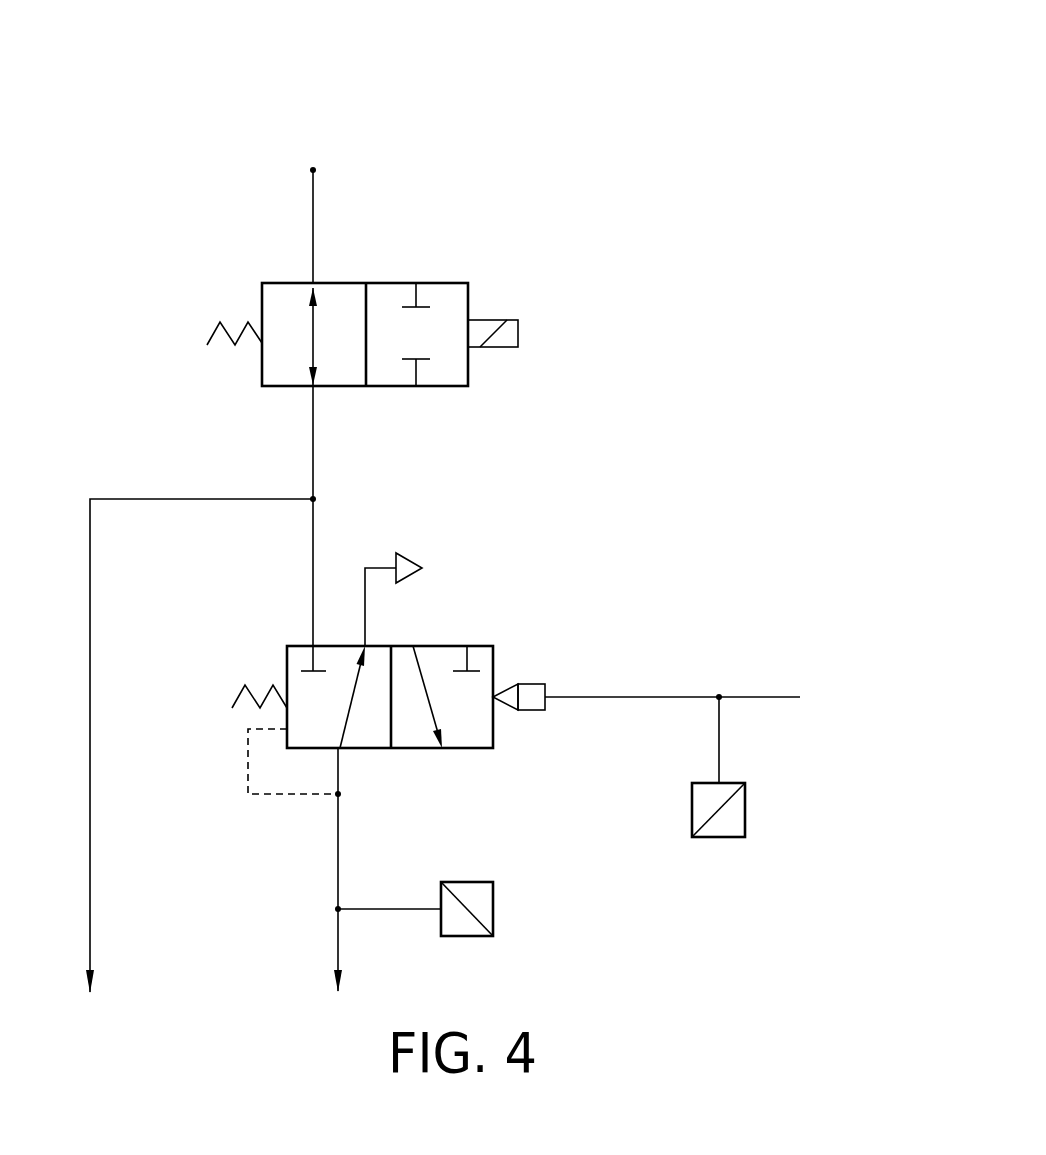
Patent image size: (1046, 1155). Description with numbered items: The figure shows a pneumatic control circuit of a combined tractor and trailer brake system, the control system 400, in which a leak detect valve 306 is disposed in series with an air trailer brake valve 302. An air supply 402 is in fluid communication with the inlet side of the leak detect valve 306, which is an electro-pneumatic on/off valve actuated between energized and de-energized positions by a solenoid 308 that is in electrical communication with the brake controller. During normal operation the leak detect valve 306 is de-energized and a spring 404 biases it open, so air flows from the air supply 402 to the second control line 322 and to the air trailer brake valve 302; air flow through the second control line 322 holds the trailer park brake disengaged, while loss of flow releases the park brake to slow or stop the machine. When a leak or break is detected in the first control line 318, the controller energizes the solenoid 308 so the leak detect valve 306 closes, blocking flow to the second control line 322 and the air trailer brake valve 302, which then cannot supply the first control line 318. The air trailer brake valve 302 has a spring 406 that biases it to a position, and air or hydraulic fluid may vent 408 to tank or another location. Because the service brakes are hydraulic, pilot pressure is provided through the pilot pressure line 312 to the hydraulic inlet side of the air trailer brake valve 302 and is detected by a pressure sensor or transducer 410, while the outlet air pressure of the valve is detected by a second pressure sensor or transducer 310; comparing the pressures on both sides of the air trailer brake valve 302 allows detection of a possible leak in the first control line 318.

The control system 400 is at (643, 105).
The air supply 402 is at (313, 170).
The leak detect valve 306 is at (442, 258).
The solenoid 308 is at (513, 319).
The spring 404 is at (212, 331).
The second control line 322 is at (90, 858).
The air trailer brake valve 302 is at (495, 627).
The spring 406 is at (233, 700).
The vent 408 is at (412, 555).
The pilot pressure line 312 is at (767, 696).
The pressure sensor or transducer 410 is at (745, 808).
The first control line 318 is at (338, 942).
The second pressure sensor or transducer 310 is at (493, 903).